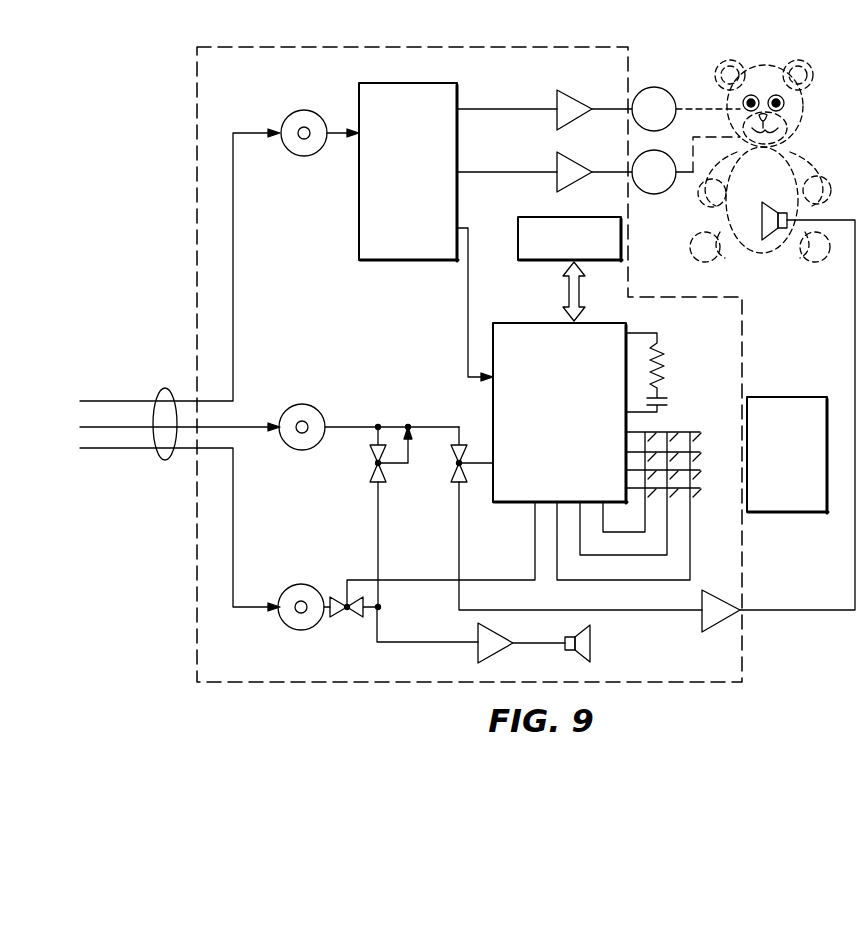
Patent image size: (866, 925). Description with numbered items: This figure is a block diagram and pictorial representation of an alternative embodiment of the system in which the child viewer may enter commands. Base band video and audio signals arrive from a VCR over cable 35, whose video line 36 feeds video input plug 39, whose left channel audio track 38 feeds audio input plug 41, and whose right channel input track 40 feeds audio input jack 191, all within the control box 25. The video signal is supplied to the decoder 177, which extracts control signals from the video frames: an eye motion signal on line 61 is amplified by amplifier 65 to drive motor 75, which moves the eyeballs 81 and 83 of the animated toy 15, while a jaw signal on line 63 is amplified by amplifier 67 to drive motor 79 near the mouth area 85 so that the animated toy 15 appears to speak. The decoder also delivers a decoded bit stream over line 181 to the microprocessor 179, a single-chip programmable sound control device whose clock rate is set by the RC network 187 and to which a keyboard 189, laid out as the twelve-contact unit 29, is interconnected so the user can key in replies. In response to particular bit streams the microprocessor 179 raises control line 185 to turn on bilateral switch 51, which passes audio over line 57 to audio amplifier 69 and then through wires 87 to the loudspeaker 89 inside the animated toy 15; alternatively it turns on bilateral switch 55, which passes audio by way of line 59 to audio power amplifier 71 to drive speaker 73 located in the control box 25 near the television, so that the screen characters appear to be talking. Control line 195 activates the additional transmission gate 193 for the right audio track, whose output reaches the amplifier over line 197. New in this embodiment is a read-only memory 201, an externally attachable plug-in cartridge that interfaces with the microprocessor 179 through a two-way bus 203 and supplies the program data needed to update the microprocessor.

The animated figure 15 is at (770, 143).
The control box 25 is at (197, 120).
The keyboard unit 29 is at (785, 397).
The cable 35 is at (160, 458).
The video line 36 is at (132, 401).
The audio line (left channel audio track) 38 is at (128, 427).
The video input plug 39 is at (314, 111).
The right channel input track 40 is at (128, 448).
The audio input plug 41 is at (312, 404).
The bilateral switch (transmission gate) 51 is at (462, 485).
The bilateral switch (transmission gate) 55 is at (371, 456).
The line 57 is at (632, 610).
The line 59 is at (378, 530).
The eye motion control signal line 61 is at (520, 109).
The jaw/mouth motion control signal line 63 is at (520, 172).
The amplifier 65 is at (575, 92).
The amplifier 67 is at (578, 158).
The audio amplifier 69 is at (712, 592).
The audio power amplifier 71 is at (496, 654).
The speaker 73 is at (592, 650).
The motor 75 is at (692, 72).
The motor 79 is at (654, 194).
The eyeball 81 is at (757, 72).
The eyeball 83 is at (786, 103).
The mouth area 85 is at (787, 130).
The wires 87 is at (780, 612).
The loudspeaker 89 is at (775, 243).
The decoder 177 is at (408, 83).
The microprocessor 179 is at (600, 323).
The line 181 is at (468, 330).
The control line 185 is at (466, 450).
The RC network 187 is at (664, 350).
The keyboard 189 is at (690, 430).
The audio input jack 191 is at (312, 586).
The valve 193 is at (345, 618).
The control line 195 is at (480, 580).
The line 197 is at (407, 642).
The read-only memory (ROM) 201 is at (542, 217).
The two-way bus 203 is at (569, 290).